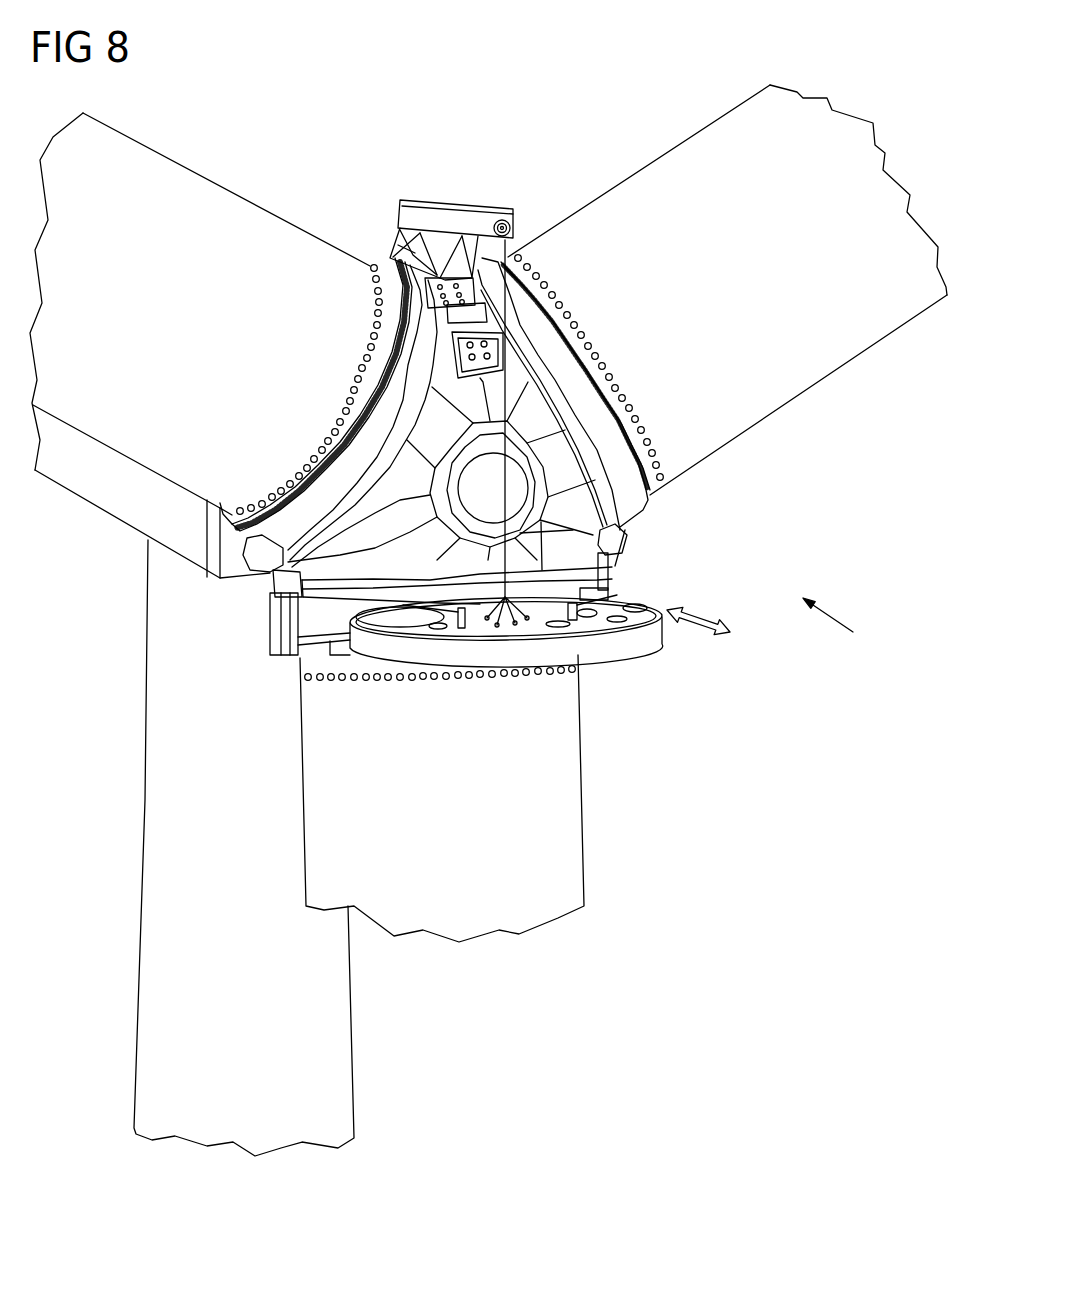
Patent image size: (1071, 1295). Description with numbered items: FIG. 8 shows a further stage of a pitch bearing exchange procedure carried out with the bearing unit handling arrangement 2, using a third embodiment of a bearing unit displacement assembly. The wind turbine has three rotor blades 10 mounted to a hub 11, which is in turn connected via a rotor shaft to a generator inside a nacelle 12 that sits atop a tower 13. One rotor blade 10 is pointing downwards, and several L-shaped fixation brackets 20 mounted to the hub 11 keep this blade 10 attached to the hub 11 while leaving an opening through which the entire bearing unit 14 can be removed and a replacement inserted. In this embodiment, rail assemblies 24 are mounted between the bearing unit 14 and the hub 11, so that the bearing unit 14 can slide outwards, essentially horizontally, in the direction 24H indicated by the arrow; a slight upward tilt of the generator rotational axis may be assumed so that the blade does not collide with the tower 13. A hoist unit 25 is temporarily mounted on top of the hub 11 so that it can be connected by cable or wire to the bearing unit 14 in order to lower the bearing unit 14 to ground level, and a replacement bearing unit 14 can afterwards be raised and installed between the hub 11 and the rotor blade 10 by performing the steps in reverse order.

The bearing unit handling arrangement 2 is at (835, 624).
The rotor blade 10 is at (143, 452).
The hub 11 is at (600, 535).
The nacelle 12 is at (115, 507).
The tower 13 is at (150, 805).
The bearing unit 14 is at (748, 647).
The fixation bracket 20 is at (277, 622).
The rail assembly 24 is at (440, 612).
The horizontal sliding direction 24H is at (700, 613).
The hoist unit 25 is at (450, 216).